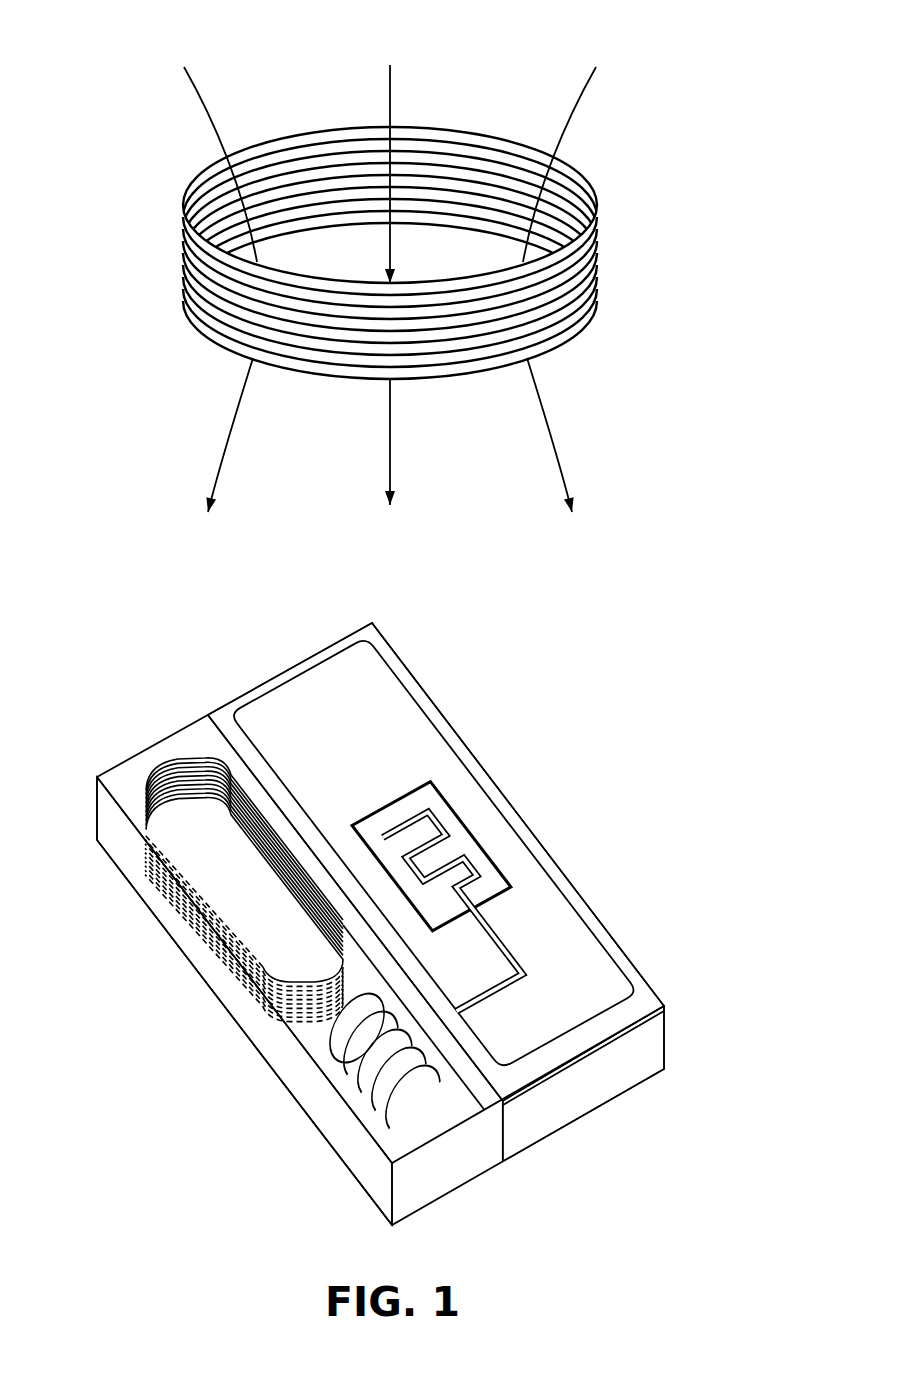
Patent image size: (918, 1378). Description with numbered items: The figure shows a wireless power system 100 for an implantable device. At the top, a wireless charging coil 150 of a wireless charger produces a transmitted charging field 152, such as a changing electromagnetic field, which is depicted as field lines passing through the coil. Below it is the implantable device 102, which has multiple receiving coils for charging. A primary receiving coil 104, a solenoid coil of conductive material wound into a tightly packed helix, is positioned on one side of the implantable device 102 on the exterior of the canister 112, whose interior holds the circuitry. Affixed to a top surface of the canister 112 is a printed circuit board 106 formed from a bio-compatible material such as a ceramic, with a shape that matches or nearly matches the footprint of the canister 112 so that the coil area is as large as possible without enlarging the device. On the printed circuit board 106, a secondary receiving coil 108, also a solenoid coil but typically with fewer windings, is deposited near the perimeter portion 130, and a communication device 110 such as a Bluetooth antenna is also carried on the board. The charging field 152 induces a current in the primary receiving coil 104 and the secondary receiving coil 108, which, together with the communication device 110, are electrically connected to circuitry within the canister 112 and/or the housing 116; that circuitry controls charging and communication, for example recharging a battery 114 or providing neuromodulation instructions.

The wireless power system 100 is at (196, 30).
The wireless charging coil 150 is at (352, 128).
The charging field 152 is at (596, 95).
The implantable device 102 is at (705, 977).
The primary receiving coil 104 is at (167, 774).
The printed circuit board 106 is at (557, 1073).
The secondary receiving coil 108 is at (573, 897).
The communication device 110 is at (483, 865).
The canister 112 is at (648, 1046).
The battery 114 is at (437, 1118).
The housing 116 is at (348, 1135).
The perimeter portion 130 is at (607, 943).